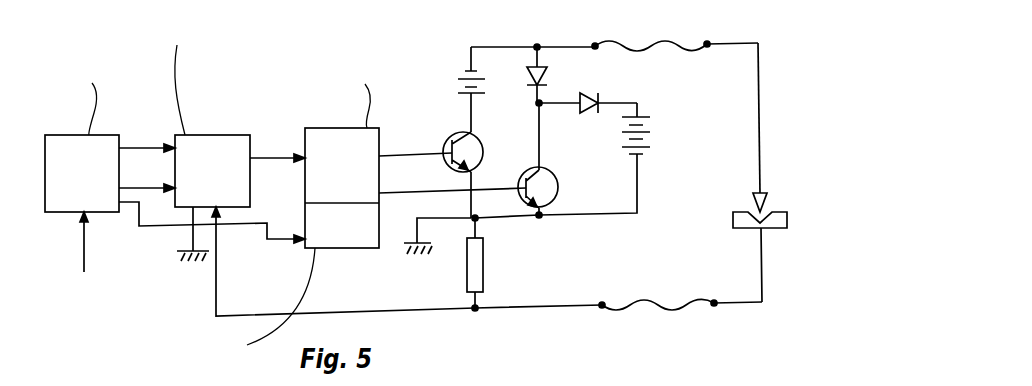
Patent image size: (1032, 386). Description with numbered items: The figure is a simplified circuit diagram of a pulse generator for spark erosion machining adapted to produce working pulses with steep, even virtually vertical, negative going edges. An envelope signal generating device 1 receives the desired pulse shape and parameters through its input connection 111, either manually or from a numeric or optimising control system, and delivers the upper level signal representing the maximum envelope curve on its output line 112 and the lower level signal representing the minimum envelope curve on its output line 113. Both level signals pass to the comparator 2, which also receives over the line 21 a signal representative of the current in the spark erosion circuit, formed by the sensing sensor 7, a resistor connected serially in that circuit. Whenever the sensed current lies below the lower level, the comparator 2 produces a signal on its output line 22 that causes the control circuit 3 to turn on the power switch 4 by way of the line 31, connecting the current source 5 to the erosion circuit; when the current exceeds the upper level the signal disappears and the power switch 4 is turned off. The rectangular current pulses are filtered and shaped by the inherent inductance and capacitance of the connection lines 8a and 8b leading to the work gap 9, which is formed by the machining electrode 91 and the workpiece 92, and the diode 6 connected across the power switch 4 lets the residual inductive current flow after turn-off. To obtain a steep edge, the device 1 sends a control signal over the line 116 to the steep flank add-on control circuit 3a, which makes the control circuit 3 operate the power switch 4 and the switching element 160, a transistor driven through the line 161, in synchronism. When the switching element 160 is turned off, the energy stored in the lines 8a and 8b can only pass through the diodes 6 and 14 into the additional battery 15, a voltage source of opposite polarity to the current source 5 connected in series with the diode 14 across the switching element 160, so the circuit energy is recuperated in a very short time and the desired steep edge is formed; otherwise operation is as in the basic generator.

The envelope signal generating device 1 is at (62, 135).
The comparator 2 is at (215, 135).
The control circuit 3 is at (336, 128).
The steep flank add-on control circuit 3a is at (347, 248).
The power switch 4 is at (456, 134).
The current source 5 is at (462, 81).
The diode 6 is at (542, 76).
The sensing sensor 7 is at (483, 272).
The connection line 8a is at (676, 32).
The connection line 8b is at (682, 319).
The work gap 9 is at (741, 172).
The diode 14 is at (590, 97).
The additional battery 15 is at (651, 136).
The line 21 is at (433, 313).
The output line 22 is at (277, 148).
The line 31 is at (415, 143).
The machining electrode 91 is at (755, 198).
The workpiece 92 is at (746, 221).
The input connection 111 is at (84, 256).
The output line 112 is at (147, 178).
The output line 113 is at (147, 140).
The line 116 is at (212, 221).
The switching element 160 is at (558, 195).
The line 161 is at (452, 180).